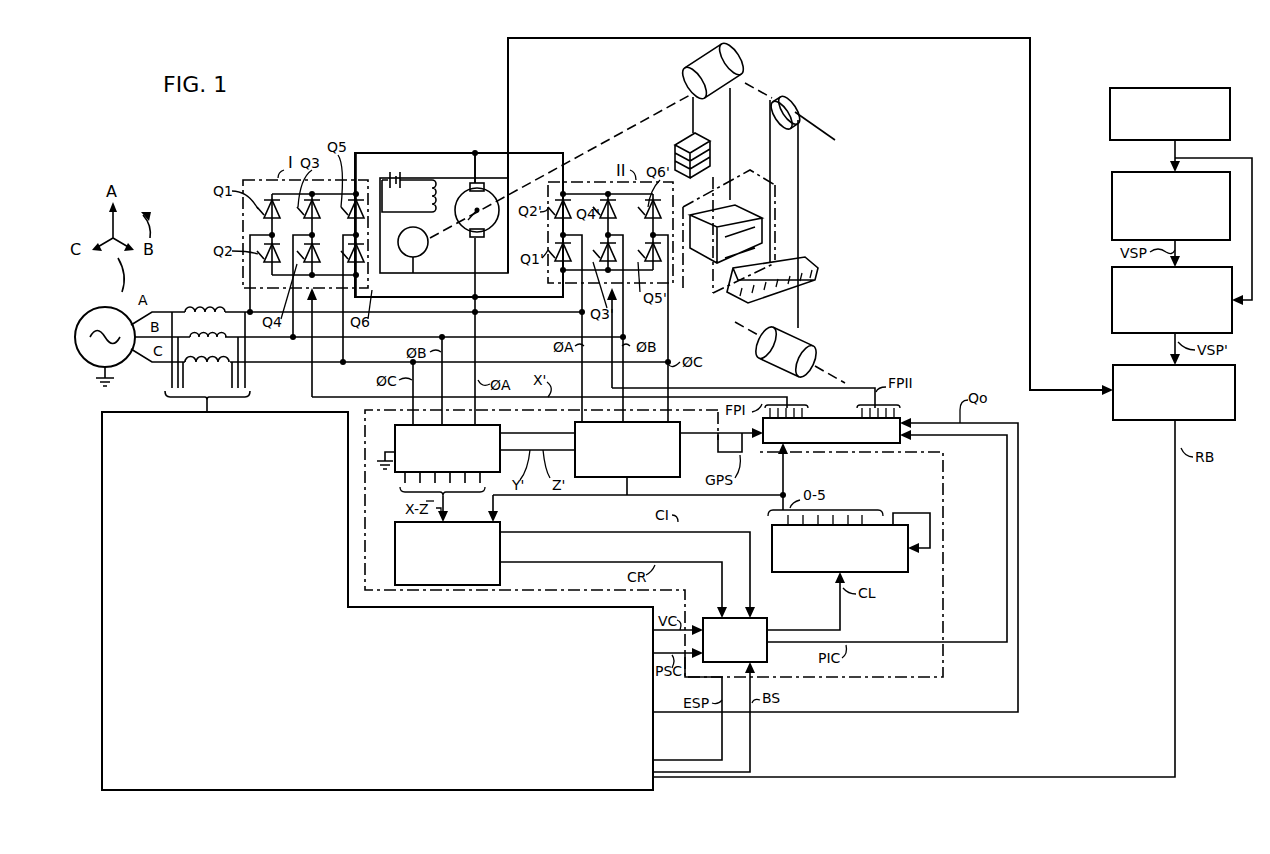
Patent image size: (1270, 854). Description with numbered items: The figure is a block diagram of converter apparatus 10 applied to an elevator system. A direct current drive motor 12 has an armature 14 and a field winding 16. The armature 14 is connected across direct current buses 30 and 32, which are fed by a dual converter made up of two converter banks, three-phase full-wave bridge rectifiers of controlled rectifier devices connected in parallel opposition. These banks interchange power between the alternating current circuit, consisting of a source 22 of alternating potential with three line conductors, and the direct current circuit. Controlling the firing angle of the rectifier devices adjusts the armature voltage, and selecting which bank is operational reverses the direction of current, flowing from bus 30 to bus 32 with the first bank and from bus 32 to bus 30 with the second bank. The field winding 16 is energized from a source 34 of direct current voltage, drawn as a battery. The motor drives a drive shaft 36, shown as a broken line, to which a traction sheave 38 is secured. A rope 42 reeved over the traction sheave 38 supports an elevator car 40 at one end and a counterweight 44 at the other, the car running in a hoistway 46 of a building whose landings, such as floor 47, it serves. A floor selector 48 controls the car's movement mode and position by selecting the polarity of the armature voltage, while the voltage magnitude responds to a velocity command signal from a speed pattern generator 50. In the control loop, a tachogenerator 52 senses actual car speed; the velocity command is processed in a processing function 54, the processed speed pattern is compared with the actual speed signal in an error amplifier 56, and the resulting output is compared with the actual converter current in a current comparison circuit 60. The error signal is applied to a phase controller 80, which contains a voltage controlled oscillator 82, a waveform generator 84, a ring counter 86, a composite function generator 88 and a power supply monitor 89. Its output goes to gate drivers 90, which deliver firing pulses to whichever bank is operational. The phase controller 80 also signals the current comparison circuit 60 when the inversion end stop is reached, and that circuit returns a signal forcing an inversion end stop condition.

The converter apparatus 10 is at (303, 123).
The direct current drive motor 12 is at (458, 188).
The armature 14 is at (484, 236).
The field winding 16 is at (427, 198).
The source of alternating potential 22 is at (104, 306).
The bus 30 is at (374, 153).
The bus 32 is at (404, 285).
The source of direct current voltage 34 is at (404, 172).
The drive shaft 36 is at (602, 140).
The traction sheave 38 is at (690, 62).
The elevator car 40 is at (700, 250).
The rope 42 is at (693, 120).
The counterweight 44 is at (676, 158).
The hoistway 46 is at (712, 192).
The floor 47 is at (818, 284).
The floor selector 48 is at (1110, 94).
The speed pattern generator 50 is at (1112, 180).
The tachogenerator 52 is at (430, 242).
The processing function 54 is at (1112, 282).
The error amplifier 56 is at (1113, 408).
The current comparison circuit 60 is at (676, 742).
The phase controller 80 is at (954, 688).
The voltage controlled oscillator 82 is at (767, 618).
The waveform generator 84 is at (395, 430).
The ring counter 86 is at (890, 580).
The composite function generator 88 is at (500, 524).
The power supply monitor 89 is at (627, 490).
The gate drivers 90 is at (900, 416).